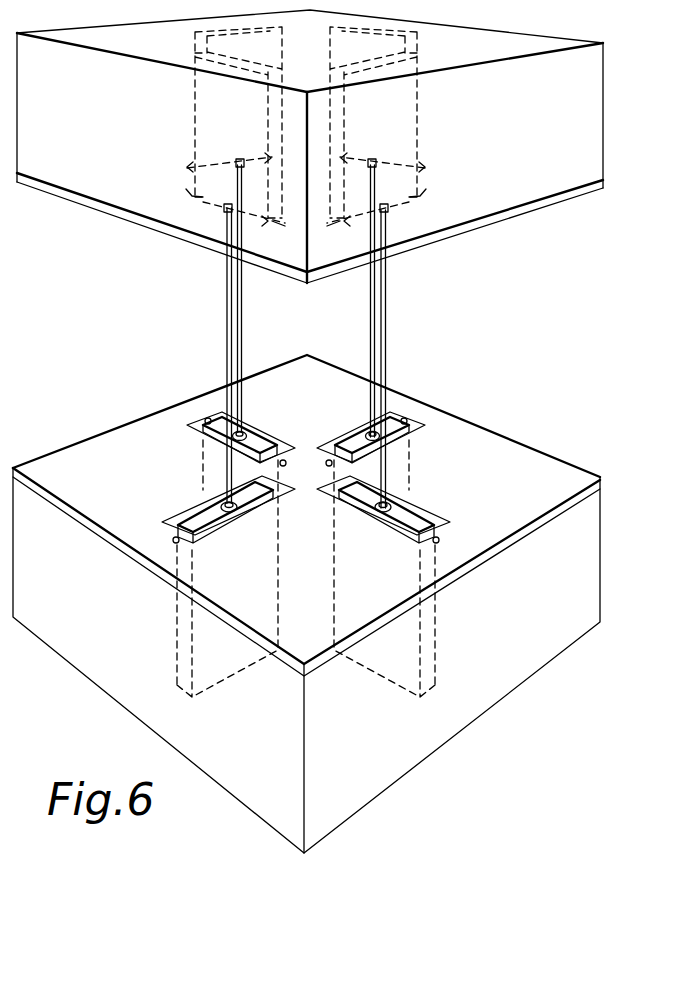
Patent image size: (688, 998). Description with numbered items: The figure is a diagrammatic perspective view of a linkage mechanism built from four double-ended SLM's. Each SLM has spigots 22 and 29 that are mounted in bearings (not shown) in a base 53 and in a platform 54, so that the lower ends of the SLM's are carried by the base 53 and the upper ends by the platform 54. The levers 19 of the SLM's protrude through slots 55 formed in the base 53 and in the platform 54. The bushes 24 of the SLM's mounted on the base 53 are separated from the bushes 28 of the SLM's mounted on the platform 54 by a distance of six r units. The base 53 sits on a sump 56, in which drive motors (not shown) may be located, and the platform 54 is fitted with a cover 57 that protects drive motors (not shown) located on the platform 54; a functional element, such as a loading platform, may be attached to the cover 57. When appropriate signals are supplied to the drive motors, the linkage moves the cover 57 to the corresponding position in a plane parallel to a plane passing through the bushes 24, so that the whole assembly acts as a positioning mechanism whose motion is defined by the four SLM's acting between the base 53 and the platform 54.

The lever 19 is at (229, 324).
The spigot 22 is at (208, 418).
The bush 24 is at (236, 441).
The bush 28 is at (238, 160).
The spigot 29 is at (190, 192).
The base 53 is at (580, 494).
The platform 54 is at (587, 188).
The slot 55 is at (254, 433).
The sump 56 is at (483, 687).
The cover 57 is at (587, 102).